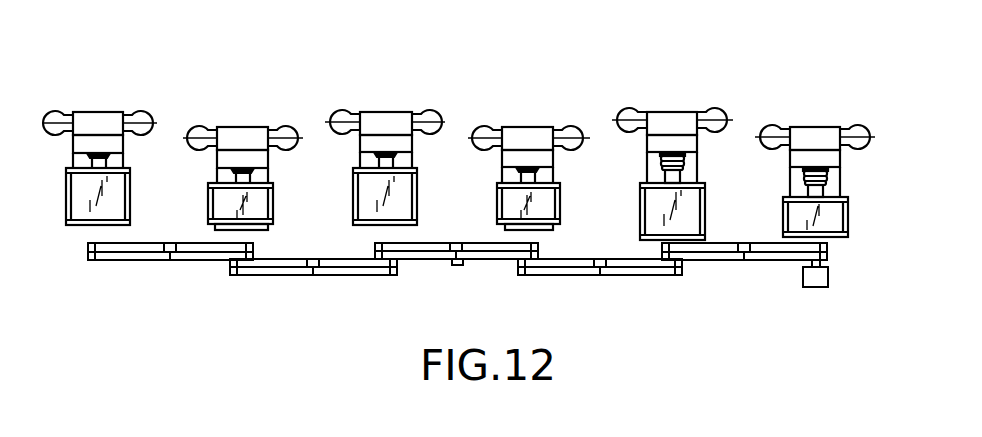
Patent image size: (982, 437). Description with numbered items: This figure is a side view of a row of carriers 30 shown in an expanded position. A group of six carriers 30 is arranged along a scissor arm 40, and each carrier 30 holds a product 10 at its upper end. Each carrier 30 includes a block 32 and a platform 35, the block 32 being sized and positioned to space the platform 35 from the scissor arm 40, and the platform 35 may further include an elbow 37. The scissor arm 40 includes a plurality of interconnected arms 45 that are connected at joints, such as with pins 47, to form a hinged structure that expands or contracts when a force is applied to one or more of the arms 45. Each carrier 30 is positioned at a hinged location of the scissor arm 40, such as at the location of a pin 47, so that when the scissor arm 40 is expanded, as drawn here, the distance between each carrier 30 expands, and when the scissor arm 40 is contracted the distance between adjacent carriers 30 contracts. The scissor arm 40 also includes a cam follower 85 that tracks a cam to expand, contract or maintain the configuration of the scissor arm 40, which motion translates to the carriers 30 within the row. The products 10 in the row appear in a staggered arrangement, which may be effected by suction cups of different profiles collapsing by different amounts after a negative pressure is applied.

The product 10 is at (611, 136).
The carrier 30 is at (850, 147).
The block 32 is at (405, 190).
The platform 35 is at (547, 158).
The elbow 37 is at (390, 122).
The scissor arm 40 is at (462, 303).
The interconnected arm 45 is at (640, 276).
The pin 47 is at (458, 266).
The cam follower 85 is at (815, 288).